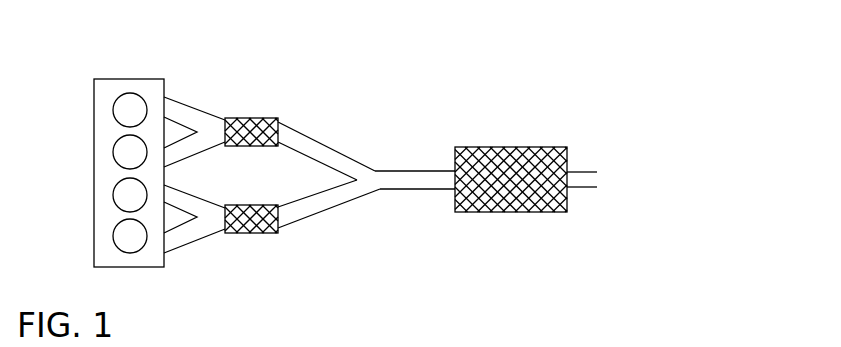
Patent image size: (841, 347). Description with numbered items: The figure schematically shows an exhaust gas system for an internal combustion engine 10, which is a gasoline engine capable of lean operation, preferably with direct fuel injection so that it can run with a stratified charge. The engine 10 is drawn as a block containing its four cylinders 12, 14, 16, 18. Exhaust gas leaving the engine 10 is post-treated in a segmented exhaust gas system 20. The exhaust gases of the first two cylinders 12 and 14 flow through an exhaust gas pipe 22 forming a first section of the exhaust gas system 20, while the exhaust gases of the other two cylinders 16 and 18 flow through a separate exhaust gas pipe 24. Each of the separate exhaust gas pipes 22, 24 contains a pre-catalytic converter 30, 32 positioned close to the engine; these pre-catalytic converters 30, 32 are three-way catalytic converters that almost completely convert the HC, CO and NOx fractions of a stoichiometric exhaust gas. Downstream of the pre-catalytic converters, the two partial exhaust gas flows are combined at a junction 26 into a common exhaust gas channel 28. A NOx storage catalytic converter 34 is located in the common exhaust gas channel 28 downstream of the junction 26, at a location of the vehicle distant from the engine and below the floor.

The internal combustion engine 10 is at (107, 89).
The cylinder 12 is at (127, 110).
The cylinder 14 is at (127, 157).
The cylinder 16 is at (127, 198).
The cylinder 18 is at (127, 243).
The segmented exhaust gas system 20 is at (368, 141).
The exhaust gas pipe 22 is at (320, 150).
The exhaust gas pipe 24 is at (321, 205).
The junction 26 is at (372, 182).
The common exhaust gas channel 28 is at (402, 178).
The pre-catalytic converter 30 is at (243, 122).
The pre-catalytic converter 32 is at (258, 213).
The NOx storage catalytic converter 34 is at (528, 158).